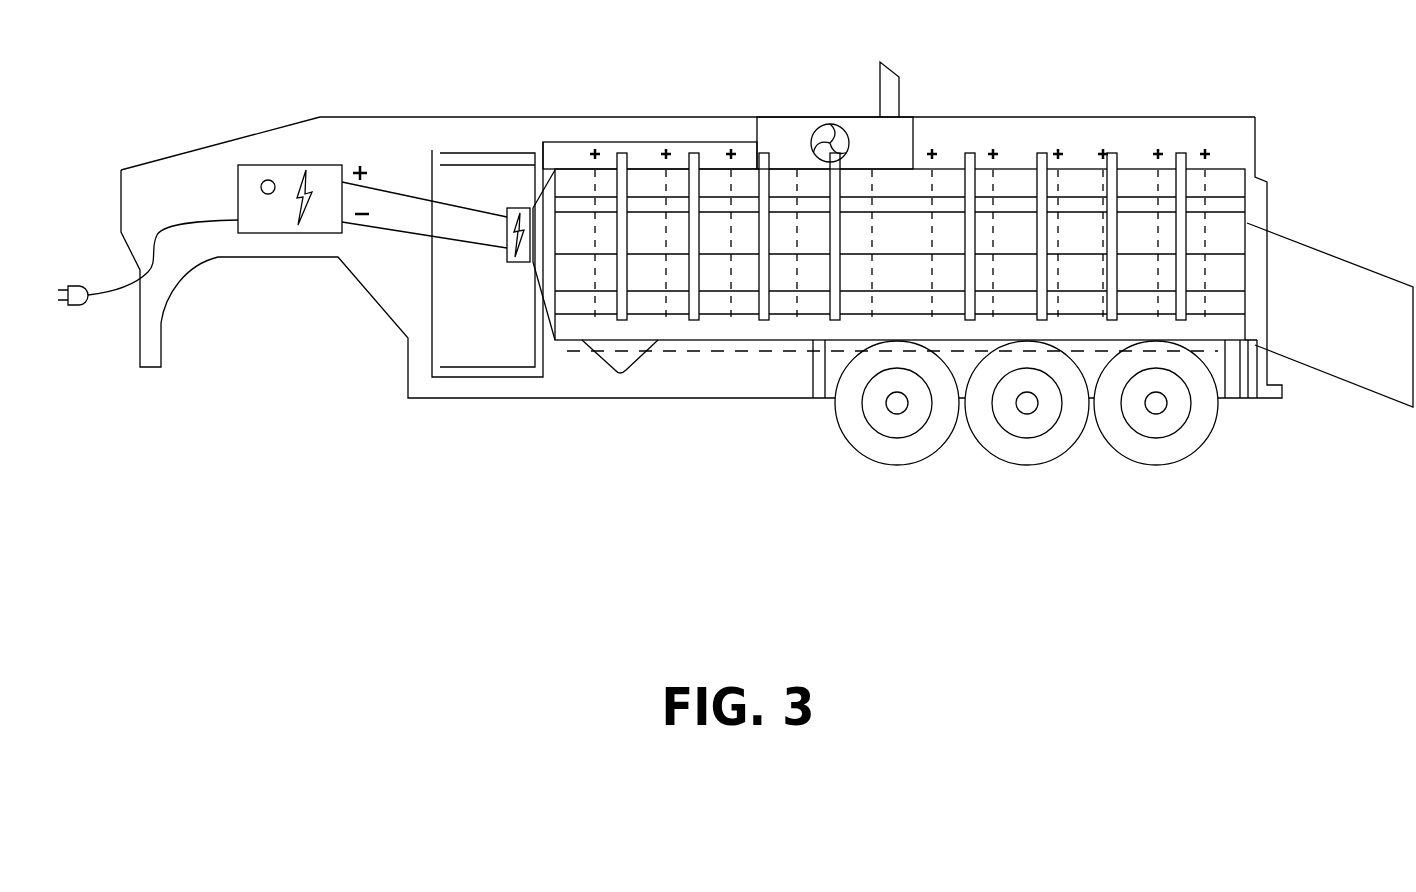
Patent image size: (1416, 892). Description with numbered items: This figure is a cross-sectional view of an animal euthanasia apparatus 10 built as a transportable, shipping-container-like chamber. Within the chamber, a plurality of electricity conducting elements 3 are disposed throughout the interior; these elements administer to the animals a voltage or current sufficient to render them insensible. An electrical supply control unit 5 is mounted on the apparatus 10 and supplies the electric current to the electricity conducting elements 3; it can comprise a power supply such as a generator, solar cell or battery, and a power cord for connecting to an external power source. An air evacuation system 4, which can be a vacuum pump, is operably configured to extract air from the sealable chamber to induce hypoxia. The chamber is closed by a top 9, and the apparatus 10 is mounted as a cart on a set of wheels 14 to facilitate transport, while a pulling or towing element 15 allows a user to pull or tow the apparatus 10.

The electricity conducting elements 3 is at (1212, 227).
The air evacuation system 4 is at (786, 115).
The electrical supply control unit 5 is at (268, 158).
The top 9 is at (1068, 115).
The apparatus 10 is at (1258, 44).
The wheels 14 is at (901, 482).
The pulling or towing element 15 is at (169, 318).